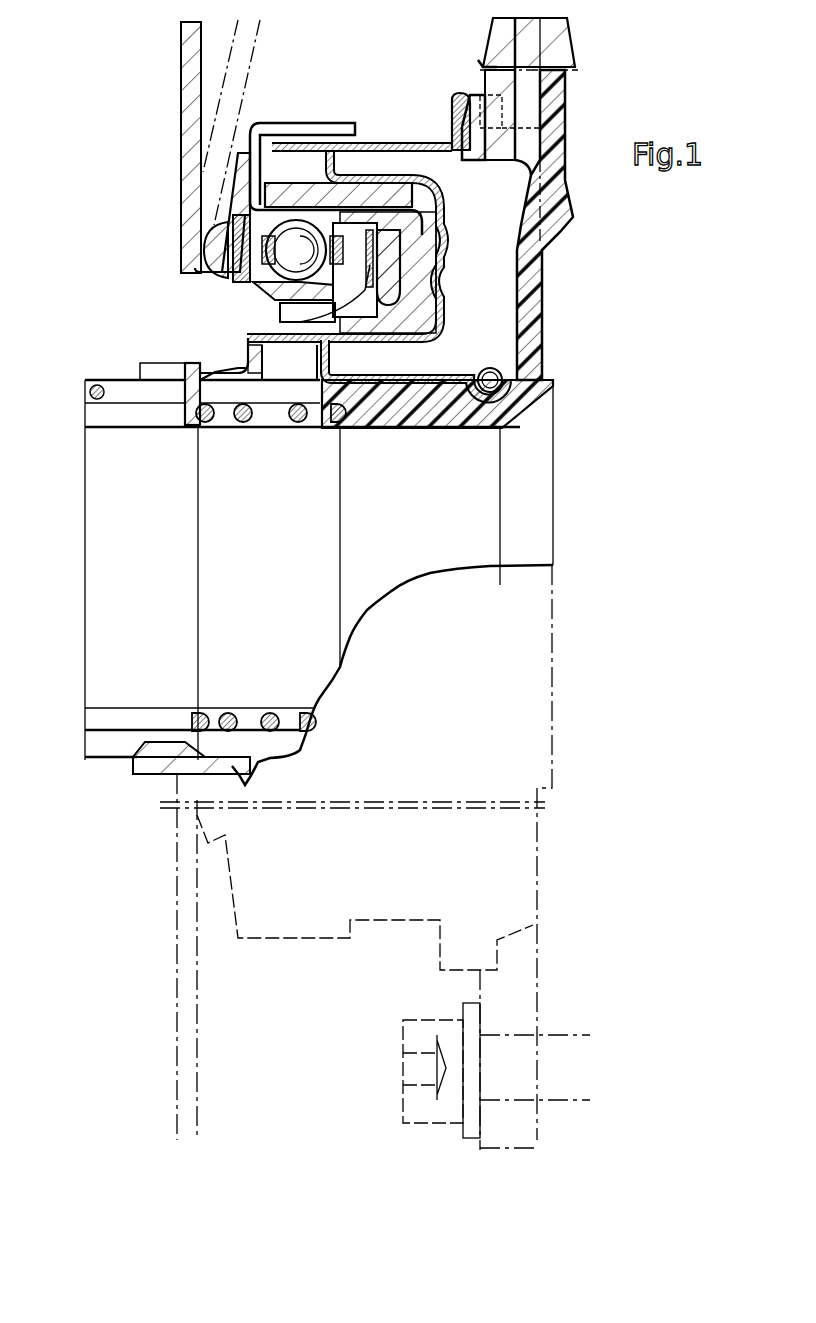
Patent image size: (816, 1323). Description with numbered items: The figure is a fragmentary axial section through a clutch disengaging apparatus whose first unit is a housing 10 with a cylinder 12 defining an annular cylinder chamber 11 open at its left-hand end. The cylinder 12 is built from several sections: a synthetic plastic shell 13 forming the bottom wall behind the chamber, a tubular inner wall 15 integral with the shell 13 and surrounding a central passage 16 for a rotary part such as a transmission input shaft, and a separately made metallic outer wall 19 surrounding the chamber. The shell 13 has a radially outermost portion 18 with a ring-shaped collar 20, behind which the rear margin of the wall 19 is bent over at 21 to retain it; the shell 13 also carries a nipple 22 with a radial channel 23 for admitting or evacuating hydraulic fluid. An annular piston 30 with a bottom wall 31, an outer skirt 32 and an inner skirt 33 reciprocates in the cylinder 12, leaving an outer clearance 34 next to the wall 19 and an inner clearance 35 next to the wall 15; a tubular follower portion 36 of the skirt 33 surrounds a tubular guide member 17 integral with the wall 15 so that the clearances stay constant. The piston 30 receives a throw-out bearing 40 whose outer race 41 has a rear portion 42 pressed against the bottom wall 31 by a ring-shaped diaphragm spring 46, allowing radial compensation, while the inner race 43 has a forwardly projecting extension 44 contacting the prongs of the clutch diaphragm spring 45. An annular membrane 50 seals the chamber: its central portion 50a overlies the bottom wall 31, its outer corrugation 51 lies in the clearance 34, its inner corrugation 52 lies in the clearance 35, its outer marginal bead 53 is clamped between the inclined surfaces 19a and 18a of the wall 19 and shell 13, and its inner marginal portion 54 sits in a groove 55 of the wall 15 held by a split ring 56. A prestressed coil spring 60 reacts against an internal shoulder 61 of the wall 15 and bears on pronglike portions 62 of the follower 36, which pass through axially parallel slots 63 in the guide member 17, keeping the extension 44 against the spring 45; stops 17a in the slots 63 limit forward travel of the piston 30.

The housing 10 is at (564, 244).
The cylinder chamber 11 is at (505, 270).
The cylinder 12 is at (540, 283).
The shell 13 is at (530, 315).
The inner wall 15 is at (422, 410).
The central passage 16 is at (398, 550).
The tubular guide member 17 is at (97, 378).
The stop 17a is at (88, 395).
The radially outermost portion 18 is at (490, 150).
The inclined surface of shell 18a is at (500, 122).
The outer wall 19 is at (440, 143).
The inclined surface of outer wall 19a is at (456, 100).
The collar 20 is at (488, 108).
The bent-over portion 21 is at (505, 102).
The nipple 22 is at (560, 85).
The channel 23 is at (540, 46).
The piston 30 is at (446, 305).
The bottom wall 31 is at (445, 238).
The outer skirt 32 is at (392, 185).
The inner skirt 33 is at (312, 385).
The outer clearance 34 is at (318, 160).
The inner clearance 35 is at (273, 385).
The follower portion 36 is at (200, 368).
The throw-out bearing 40 is at (235, 292).
The outer race 41 is at (290, 205).
The rear portion 42 is at (398, 300).
The inner race 43 is at (280, 295).
The extension 44 is at (212, 255).
The diaphragm spring 45 is at (192, 125).
The ring-shaped diaphragm spring 46 is at (304, 322).
The membrane 50 is at (455, 405).
The central portion 50a is at (420, 400).
The outer corrugation 51 is at (360, 143).
The inner corrugation 52 is at (405, 386).
The outer marginal portion 53 is at (455, 102).
The inner marginal portion 54 is at (504, 380).
The groove 55 is at (500, 395).
The split ring 56 is at (500, 368).
The coil spring 60 is at (241, 420).
The internal shoulder 61 is at (337, 425).
The pronglike portions 62 is at (190, 408).
The slots 63 is at (137, 405).